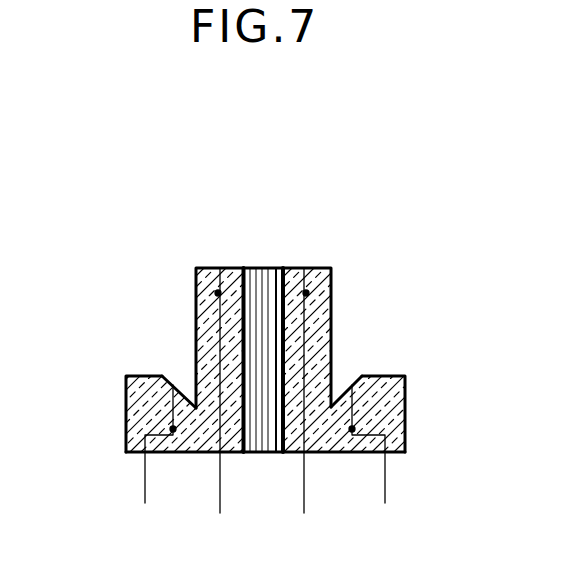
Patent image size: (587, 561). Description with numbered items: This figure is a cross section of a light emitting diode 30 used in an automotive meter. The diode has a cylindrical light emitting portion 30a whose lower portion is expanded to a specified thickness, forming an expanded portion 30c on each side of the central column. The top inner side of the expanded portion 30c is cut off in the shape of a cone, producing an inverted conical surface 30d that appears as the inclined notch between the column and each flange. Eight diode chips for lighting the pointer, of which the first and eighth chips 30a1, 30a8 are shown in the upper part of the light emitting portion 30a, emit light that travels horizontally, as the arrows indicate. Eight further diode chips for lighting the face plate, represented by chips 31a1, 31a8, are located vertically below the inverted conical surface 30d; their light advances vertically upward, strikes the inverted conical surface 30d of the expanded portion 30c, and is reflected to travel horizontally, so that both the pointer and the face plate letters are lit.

The light emitting diode 30 is at (267, 184).
The cylindrical light emitting portion 30a is at (335, 268).
The diode chip 30a1 is at (216, 293).
The diode chip 30a8 is at (405, 293).
The expanded portion 30c is at (125, 426).
The inverted conical surface 30d is at (178, 385).
The diode chip 31a1 is at (64, 386).
The diode chip 31a8 is at (467, 386).